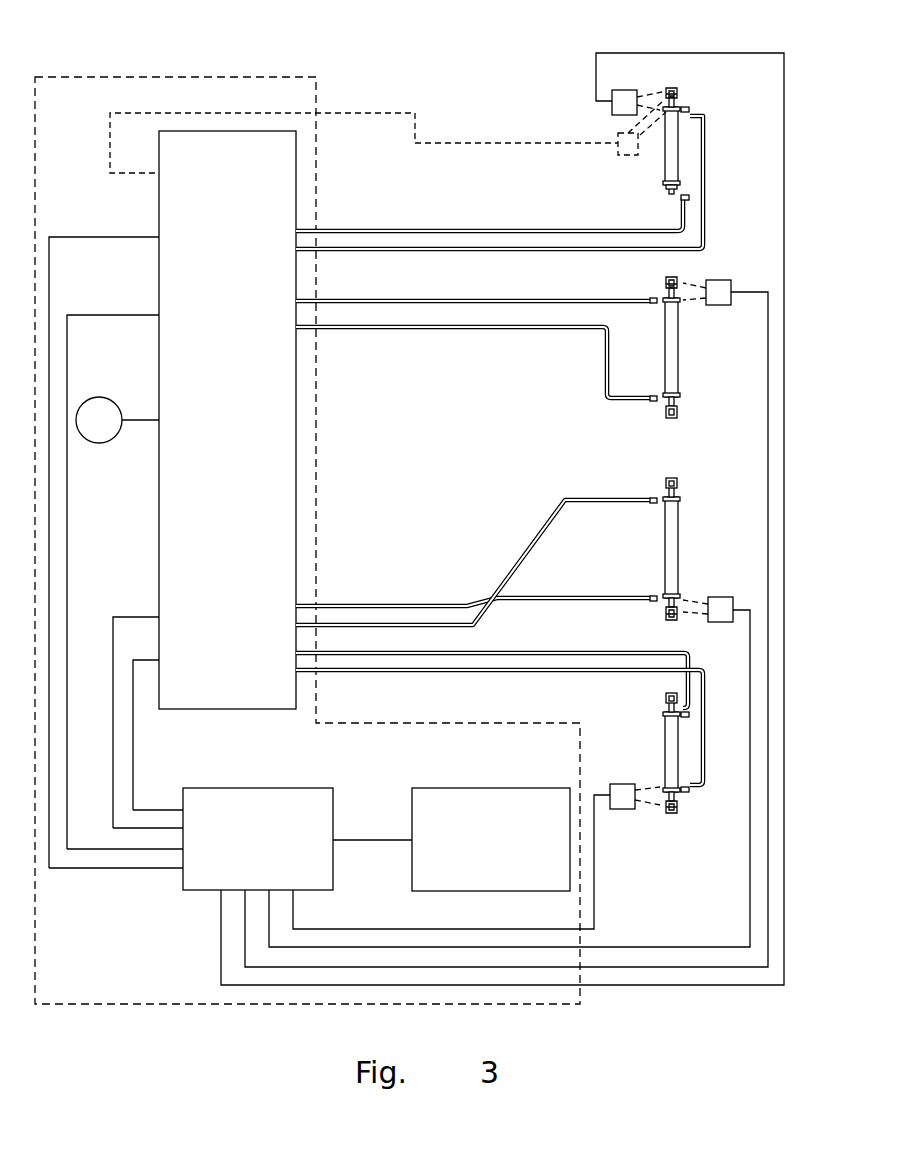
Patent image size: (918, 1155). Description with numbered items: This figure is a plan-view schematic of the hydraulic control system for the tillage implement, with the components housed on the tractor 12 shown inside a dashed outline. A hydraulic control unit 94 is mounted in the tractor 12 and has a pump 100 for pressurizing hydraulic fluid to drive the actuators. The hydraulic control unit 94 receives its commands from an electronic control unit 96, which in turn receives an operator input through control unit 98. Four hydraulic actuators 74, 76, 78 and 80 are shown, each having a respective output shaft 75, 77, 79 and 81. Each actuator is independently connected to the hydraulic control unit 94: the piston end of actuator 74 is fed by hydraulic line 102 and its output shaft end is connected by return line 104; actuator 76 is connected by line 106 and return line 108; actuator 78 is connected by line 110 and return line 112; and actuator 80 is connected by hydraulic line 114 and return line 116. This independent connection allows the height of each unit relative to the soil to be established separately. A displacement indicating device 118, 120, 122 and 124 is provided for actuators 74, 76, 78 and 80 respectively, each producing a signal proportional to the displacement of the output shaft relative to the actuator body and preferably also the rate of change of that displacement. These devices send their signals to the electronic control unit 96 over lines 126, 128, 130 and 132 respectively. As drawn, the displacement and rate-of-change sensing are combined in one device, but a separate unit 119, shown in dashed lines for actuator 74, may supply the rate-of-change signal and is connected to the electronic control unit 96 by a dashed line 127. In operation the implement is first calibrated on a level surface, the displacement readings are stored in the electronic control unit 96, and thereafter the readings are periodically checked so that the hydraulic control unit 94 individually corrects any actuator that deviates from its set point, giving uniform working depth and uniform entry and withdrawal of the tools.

The tractor 12 is at (120, 1004).
The actuator 74 is at (665, 150).
The output shaft 75 is at (685, 95).
The actuator 76 is at (680, 360).
The output shaft 77 is at (663, 290).
The actuator 78 is at (680, 540).
The output shaft 79 is at (663, 618).
The actuator 80 is at (665, 740).
The output shaft 81 is at (685, 810).
The hydraulic control unit 94 is at (250, 710).
The electronic control unit 96 is at (205, 890).
The operator input control unit 98 is at (436, 788).
The pump 100 is at (100, 444).
The hydraulic line 102 is at (395, 228).
The return line 104 is at (395, 250).
The line 106 is at (365, 328).
The return line 108 is at (530, 300).
The line 110 is at (535, 525).
The return line 112 is at (557, 598).
The hydraulic line 114 is at (470, 672).
The return line 116 is at (490, 655).
The displacement indicating device 118 is at (612, 108).
The separate unit 119 is at (617, 150).
The displacement indicating device 120 is at (730, 280).
The displacement indicating device 122 is at (720, 597).
The displacement indicating device 124 is at (628, 810).
The line 126 is at (765, 52).
The line 127 is at (452, 143).
The line 128 is at (768, 820).
The line 130 is at (749, 910).
The line 132 is at (415, 928).